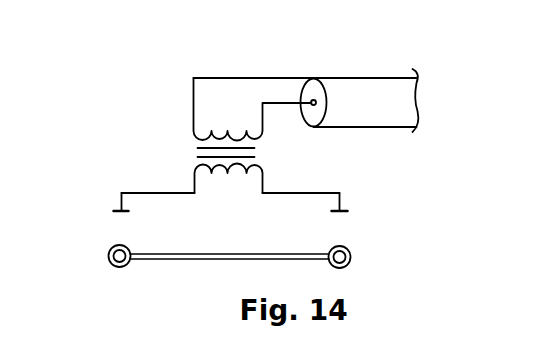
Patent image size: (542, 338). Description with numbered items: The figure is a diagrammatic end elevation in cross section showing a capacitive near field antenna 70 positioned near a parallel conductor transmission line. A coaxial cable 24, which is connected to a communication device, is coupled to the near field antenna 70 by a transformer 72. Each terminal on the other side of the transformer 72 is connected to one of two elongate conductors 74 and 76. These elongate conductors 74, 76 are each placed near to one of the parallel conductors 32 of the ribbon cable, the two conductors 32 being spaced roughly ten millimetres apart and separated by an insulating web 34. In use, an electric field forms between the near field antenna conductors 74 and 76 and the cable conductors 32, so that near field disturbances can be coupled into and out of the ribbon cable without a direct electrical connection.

The coaxial cable 24 is at (364, 78).
The transformer 72 is at (186, 155).
The capacitive near field antenna 70 is at (421, 174).
The elongate conductor 74 is at (118, 211).
The elongate conductor 76 is at (348, 212).
The insulating web 34 is at (250, 253).
The conductors 32 is at (109, 257).